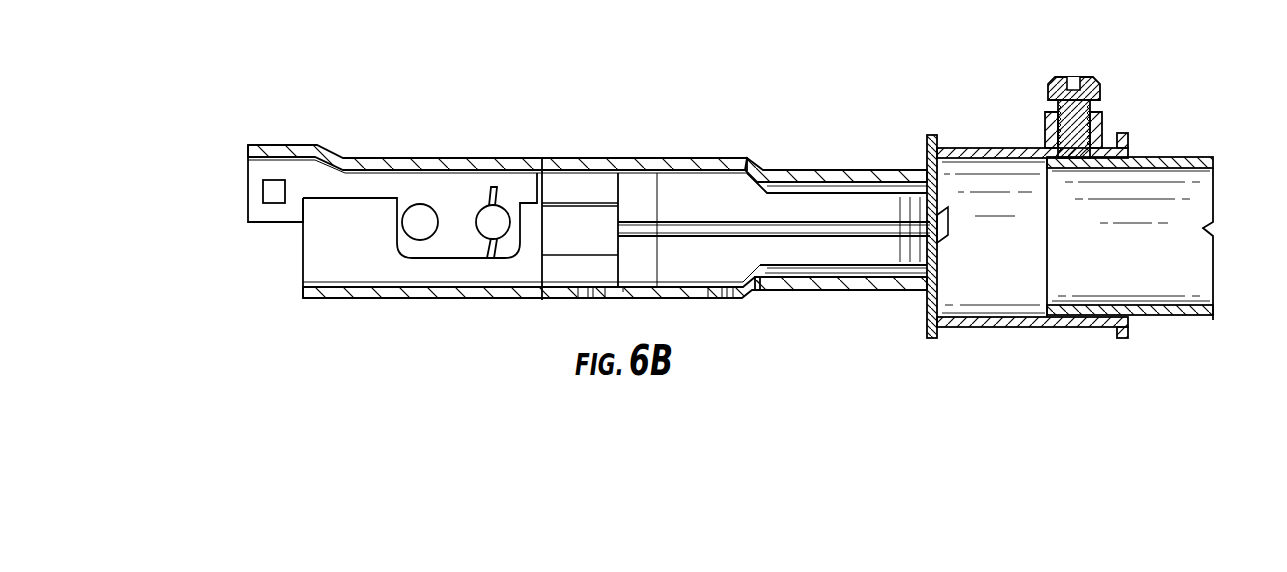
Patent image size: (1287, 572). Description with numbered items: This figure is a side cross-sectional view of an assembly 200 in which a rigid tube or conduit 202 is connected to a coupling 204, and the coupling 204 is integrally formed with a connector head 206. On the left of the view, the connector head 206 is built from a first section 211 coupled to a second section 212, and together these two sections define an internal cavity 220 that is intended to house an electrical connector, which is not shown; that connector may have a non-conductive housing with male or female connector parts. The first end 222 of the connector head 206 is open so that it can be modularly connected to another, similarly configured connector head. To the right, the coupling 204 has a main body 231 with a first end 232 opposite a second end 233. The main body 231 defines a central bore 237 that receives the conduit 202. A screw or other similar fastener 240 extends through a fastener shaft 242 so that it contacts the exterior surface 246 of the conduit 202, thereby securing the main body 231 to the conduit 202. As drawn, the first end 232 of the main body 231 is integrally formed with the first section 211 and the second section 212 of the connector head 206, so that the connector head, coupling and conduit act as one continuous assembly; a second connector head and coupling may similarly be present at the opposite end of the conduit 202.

The assembly 200 is at (688, 78).
The conduit 202 is at (1193, 155).
The coupling 204 is at (968, 340).
The connector head 206 is at (476, 133).
The first section 211 is at (774, 172).
The second section 212 is at (778, 290).
The internal cavity 220 is at (340, 244).
The first end 222 is at (245, 128).
The main body 231 is at (985, 148).
The first end 232 is at (928, 125).
The second end 233 is at (1129, 130).
The central bore 237 is at (1016, 284).
The fastener 240 is at (1058, 79).
The fastener shaft 242 is at (1046, 128).
The exterior surface 246 is at (1170, 318).